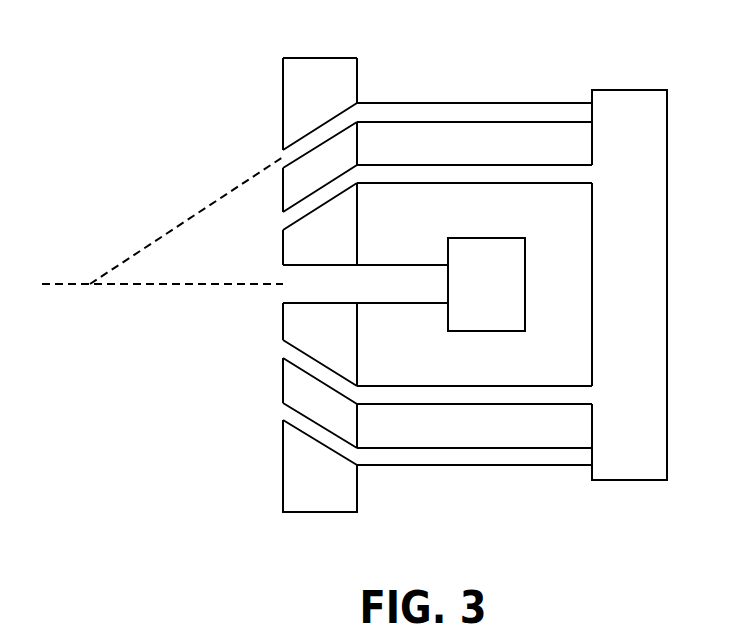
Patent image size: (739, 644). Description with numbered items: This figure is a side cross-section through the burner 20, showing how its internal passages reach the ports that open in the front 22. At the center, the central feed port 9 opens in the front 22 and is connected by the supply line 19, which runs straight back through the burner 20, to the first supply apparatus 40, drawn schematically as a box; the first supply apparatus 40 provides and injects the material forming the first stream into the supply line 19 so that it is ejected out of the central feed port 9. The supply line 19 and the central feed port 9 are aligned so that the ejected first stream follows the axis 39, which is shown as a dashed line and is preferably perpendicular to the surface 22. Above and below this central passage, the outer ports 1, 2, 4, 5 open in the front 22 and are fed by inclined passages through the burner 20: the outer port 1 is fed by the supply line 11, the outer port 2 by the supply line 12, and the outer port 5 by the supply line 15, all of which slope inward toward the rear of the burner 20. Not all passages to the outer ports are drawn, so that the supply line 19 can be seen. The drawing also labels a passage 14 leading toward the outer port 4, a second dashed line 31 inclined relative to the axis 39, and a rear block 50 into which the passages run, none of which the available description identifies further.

The outer port 1 is at (282, 156).
The outer port 2 is at (282, 222).
The outer port 4 is at (282, 345).
The outer port 5 is at (282, 410).
The central feed port 9 is at (280, 295).
The supply line 11 is at (320, 125).
The supply line 12 is at (368, 163).
The lower block 14 is at (328, 367).
The supply line 15 is at (310, 442).
The supply line 19 is at (300, 265).
The burner 20 is at (306, 58).
The front 22 is at (282, 69).
The inclined axis 31 is at (150, 243).
The axis 39 is at (168, 288).
The first supply apparatus 40 is at (486, 284).
The processing unit 50 is at (629, 285).